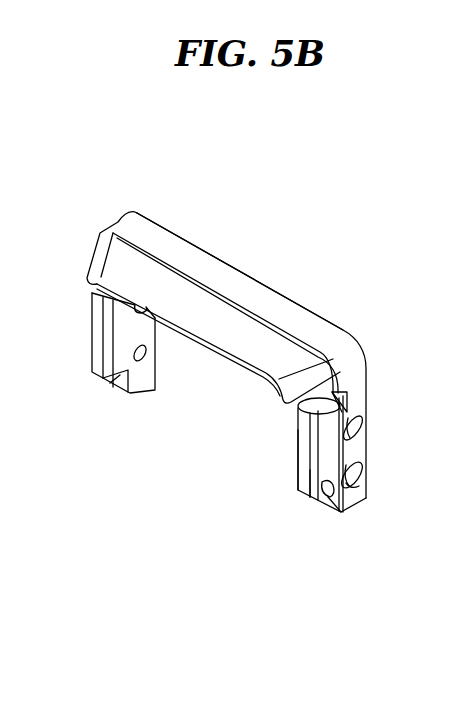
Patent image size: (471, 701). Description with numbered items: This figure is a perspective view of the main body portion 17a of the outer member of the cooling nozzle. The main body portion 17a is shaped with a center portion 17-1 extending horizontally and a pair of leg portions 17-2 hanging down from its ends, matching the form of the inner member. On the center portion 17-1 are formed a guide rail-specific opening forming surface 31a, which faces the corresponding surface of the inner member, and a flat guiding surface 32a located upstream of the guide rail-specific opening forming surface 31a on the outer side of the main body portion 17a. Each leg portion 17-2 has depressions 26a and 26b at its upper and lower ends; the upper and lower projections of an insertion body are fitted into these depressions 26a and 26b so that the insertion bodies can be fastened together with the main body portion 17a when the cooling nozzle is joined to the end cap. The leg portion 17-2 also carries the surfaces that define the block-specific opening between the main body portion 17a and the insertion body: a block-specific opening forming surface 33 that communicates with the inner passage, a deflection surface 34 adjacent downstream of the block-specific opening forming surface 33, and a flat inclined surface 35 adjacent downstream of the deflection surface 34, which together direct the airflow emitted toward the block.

The center portion 17-1 is at (293, 297).
The leg portion 17-2 is at (370, 443).
The main body portion 17a is at (247, 263).
The guiding surface 32a is at (199, 310).
The guide rail-specific opening forming surface 31a is at (190, 333).
The depression 26a is at (348, 398).
The depression 26b is at (367, 497).
The block-specific opening forming surface 33 is at (300, 466).
The deflection surface 34 is at (322, 473).
The inclined surface 35 is at (340, 495).